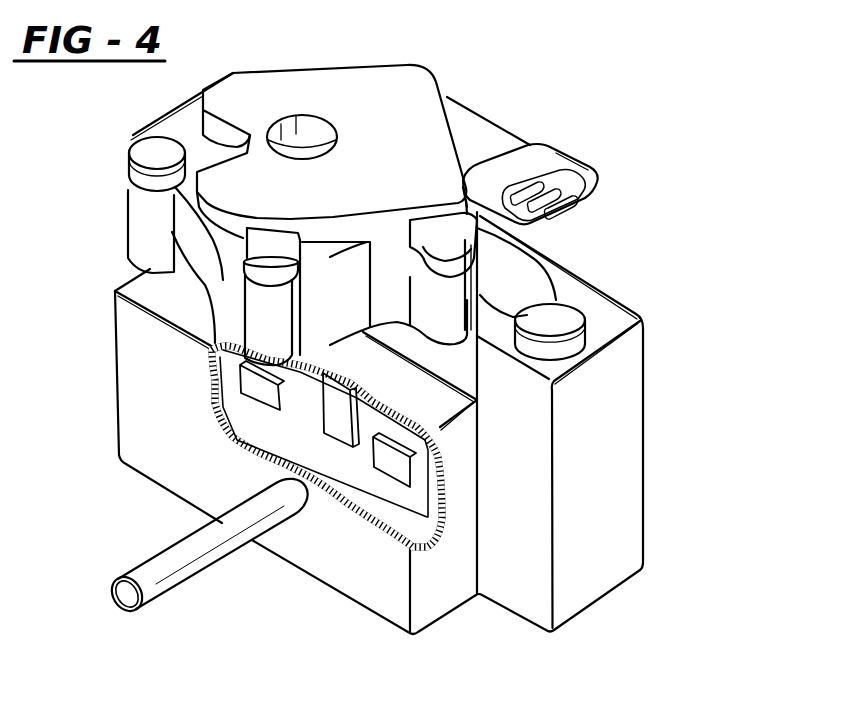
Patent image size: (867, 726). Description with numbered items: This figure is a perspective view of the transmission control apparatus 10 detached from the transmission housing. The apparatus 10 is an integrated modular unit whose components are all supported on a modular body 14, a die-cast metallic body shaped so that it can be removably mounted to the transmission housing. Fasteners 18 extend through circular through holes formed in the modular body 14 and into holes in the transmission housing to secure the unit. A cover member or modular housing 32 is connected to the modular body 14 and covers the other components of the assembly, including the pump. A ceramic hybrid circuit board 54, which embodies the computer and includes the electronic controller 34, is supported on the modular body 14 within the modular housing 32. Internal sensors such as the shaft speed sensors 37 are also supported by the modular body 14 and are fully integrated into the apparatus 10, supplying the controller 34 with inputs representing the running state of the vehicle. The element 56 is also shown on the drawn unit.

The transmission control apparatus 10 is at (444, 96).
The modular body 14 is at (607, 503).
The fasteners 18 is at (133, 152).
The modular housing 32 is at (598, 293).
The electronic controller 34 is at (290, 427).
The ceramic hybrid circuit board 54 is at (328, 424).
The shaft speed sensors 37 is at (197, 563).
The cap plate 56 is at (268, 84).